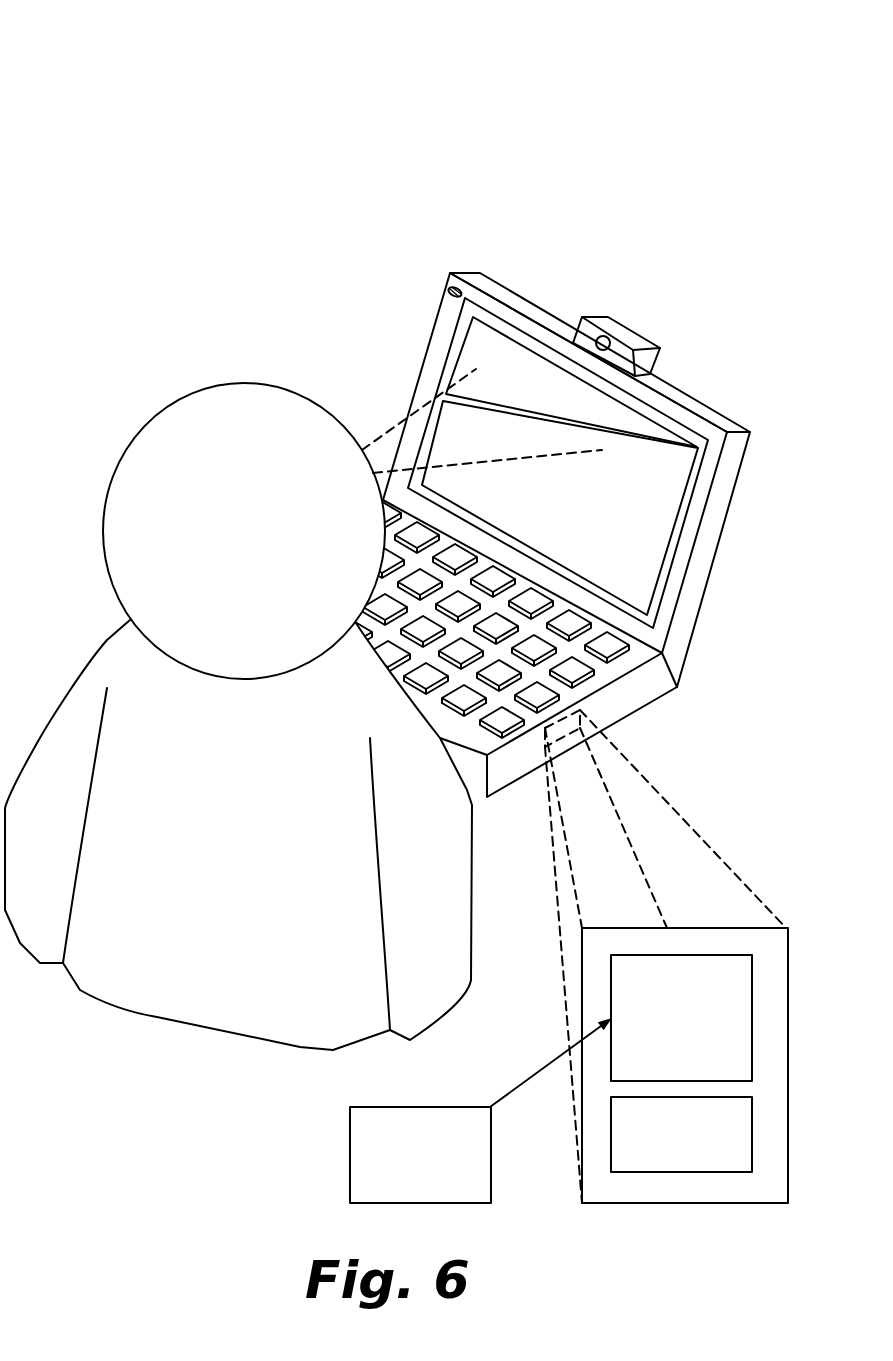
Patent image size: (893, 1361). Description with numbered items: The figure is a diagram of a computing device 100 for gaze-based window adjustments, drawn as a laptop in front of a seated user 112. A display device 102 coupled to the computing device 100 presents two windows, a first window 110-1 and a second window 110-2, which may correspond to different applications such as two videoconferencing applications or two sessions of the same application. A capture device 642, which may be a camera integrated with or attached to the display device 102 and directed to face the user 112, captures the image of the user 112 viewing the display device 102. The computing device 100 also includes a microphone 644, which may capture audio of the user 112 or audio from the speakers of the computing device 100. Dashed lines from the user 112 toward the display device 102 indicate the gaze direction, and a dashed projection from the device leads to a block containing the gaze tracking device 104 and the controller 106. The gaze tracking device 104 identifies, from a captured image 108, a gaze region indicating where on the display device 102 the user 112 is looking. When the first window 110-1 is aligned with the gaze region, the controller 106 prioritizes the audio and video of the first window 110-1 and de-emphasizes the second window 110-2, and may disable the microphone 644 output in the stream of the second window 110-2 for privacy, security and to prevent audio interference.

The computing device 100 is at (192, 84).
The display device 102 is at (561, 508).
The gaze tracking device 104 is at (681, 1018).
The controller 106 is at (681, 1134).
The captured image 108 is at (481, 1110).
The first window 110-1 is at (547, 385).
The second window 110-2 is at (657, 557).
The user 112 is at (187, 413).
The capture device 642 is at (635, 342).
The microphone 644 is at (452, 288).